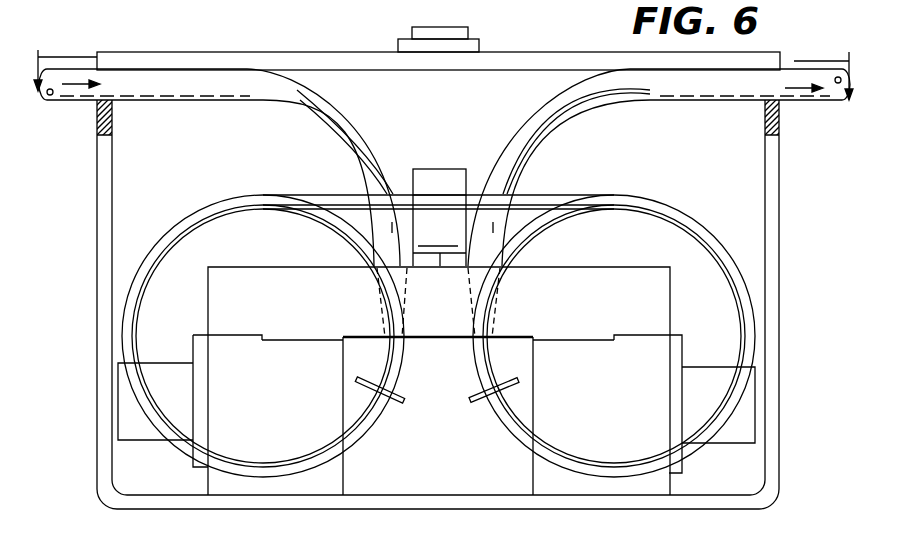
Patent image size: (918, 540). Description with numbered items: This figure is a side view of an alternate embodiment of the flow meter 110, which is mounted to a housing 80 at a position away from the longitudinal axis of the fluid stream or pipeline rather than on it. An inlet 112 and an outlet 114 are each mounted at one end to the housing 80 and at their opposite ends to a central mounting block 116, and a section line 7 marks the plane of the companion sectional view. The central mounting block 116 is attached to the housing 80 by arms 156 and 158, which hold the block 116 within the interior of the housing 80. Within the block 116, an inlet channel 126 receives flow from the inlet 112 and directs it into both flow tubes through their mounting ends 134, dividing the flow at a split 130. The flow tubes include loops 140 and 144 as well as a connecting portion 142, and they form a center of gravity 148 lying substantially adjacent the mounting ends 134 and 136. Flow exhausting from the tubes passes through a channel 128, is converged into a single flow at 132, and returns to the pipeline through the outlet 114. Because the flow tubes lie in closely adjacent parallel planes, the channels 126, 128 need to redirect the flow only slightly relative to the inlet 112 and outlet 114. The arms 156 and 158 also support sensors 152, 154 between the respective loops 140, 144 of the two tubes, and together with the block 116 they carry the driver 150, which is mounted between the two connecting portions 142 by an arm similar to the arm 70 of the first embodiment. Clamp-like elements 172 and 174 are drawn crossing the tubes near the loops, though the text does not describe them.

The section line 7 is at (443, 60).
The arm 70 is at (439, 230).
The housing 80 is at (780, 235).
The flow meter 110 is at (86, 213).
The inlet 112 is at (160, 87).
The outlet 114 is at (735, 88).
The central mounting block 116 is at (272, 275).
The inlet channel 126 is at (386, 297).
The channel 128 is at (488, 294).
The split 130 is at (390, 298).
The convergence point 132 is at (493, 298).
The mounting end 134 is at (357, 343).
The mounting end 136 is at (495, 343).
The loop 140 is at (390, 418).
The connecting portion 142 is at (550, 193).
The loop 144 is at (513, 420).
The center of gravity 148 is at (436, 322).
The driver 150 is at (462, 143).
The sensor 152 is at (127, 403).
The sensor 154 is at (745, 418).
The arm 156 is at (223, 357).
The arm 158 is at (660, 358).
The left clamp 172 is at (350, 392).
The right clamp 174 is at (510, 392).